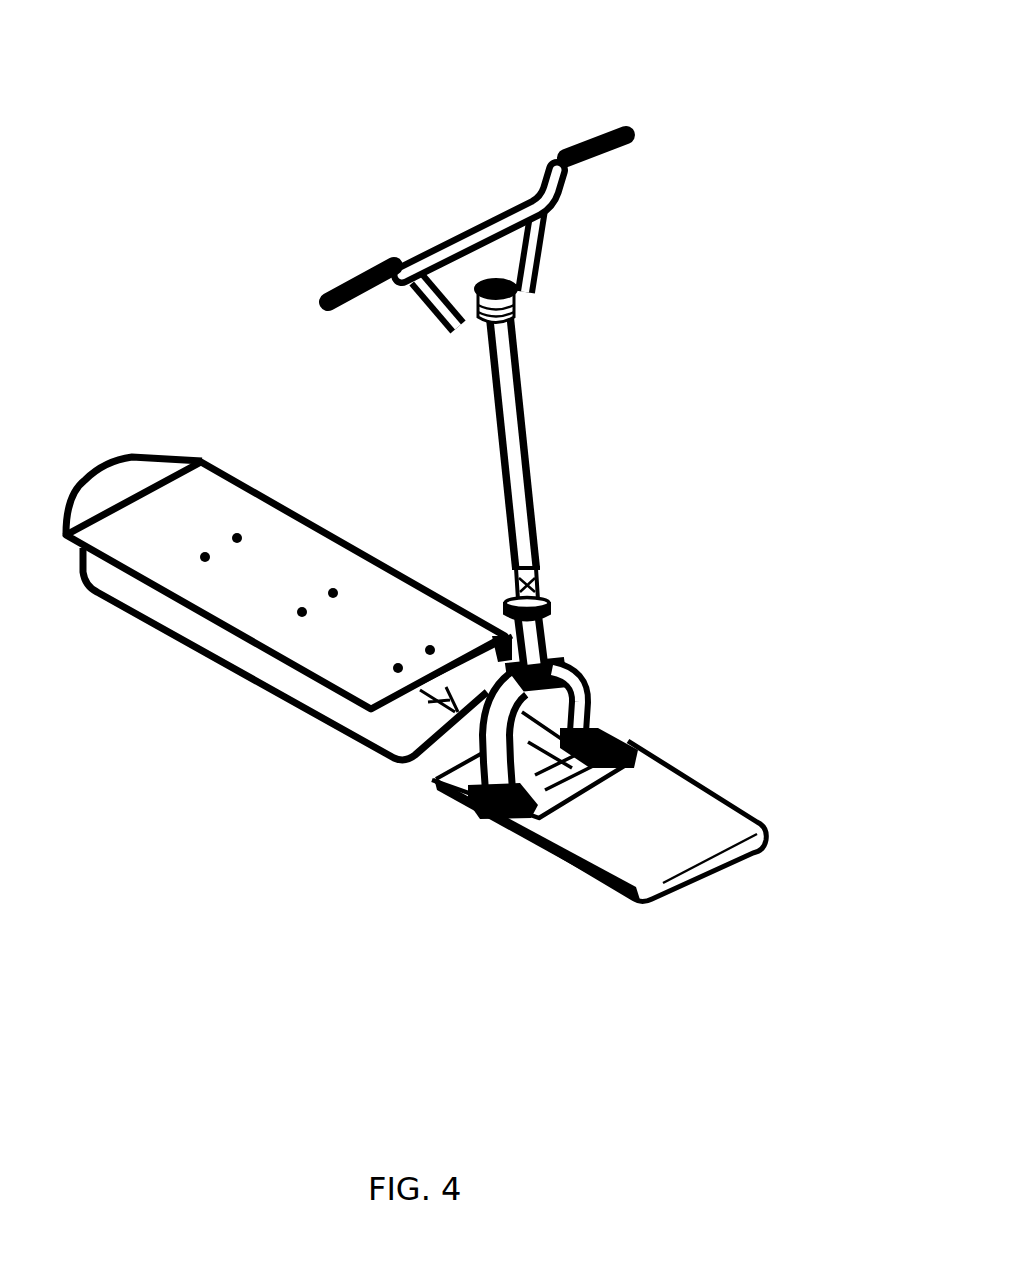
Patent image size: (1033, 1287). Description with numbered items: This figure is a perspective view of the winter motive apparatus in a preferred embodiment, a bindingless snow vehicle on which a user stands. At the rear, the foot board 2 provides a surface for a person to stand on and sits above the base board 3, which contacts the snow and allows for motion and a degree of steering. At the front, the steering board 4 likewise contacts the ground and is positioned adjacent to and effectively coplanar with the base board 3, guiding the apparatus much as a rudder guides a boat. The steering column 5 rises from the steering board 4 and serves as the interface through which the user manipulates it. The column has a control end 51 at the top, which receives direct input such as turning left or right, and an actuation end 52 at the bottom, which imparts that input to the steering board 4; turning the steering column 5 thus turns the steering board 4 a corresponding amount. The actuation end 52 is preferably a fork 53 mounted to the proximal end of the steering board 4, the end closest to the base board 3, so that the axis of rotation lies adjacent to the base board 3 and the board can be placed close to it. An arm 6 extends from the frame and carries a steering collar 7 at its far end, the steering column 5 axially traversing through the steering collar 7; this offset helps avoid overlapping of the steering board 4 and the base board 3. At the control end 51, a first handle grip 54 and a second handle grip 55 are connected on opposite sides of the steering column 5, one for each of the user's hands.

The foot board 2 is at (207, 480).
The base board 3 is at (305, 688).
The steering board 4 is at (600, 853).
The steering column 5 is at (510, 450).
The arm 6 is at (497, 657).
The steering collar 7 is at (542, 622).
The control end 51 is at (542, 308).
The actuation end 52 is at (587, 637).
The fork 53 is at (577, 690).
The first handle grip 54 is at (603, 128).
The second handle grip 55 is at (340, 280).